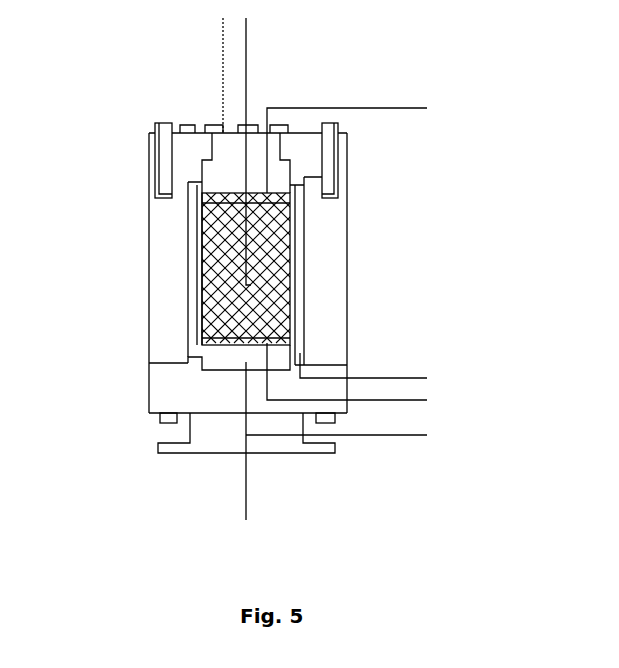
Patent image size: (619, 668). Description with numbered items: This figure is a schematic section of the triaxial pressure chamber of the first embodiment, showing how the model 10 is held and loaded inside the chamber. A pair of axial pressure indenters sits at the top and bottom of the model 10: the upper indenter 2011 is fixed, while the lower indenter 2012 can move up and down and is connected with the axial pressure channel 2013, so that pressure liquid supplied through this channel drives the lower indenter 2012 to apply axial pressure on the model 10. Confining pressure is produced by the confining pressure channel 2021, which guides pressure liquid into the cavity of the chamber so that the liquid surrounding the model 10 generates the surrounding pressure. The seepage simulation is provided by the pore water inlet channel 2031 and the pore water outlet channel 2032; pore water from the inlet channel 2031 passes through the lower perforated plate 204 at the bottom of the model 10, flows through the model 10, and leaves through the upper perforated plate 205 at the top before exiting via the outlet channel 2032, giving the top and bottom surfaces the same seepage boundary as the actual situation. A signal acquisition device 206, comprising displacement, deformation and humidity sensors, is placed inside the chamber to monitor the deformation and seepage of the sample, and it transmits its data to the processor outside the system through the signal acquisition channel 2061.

The model 10 is at (267, 297).
The lower perforated plate 204 is at (263, 343).
The upper perforated plate 205 is at (240, 203).
The signal acquisition device 206 is at (250, 280).
The upper indenter 2011 is at (238, 167).
The lower indenter 2012 is at (238, 357).
The axial pressure channel 2013 is at (246, 517).
The confining pressure channel 2021 is at (300, 360).
The pore water inlet channel 2031 is at (267, 343).
The pore water outlet channel 2032 is at (255, 195).
The signal acquisition channel 2061 is at (202, 212).